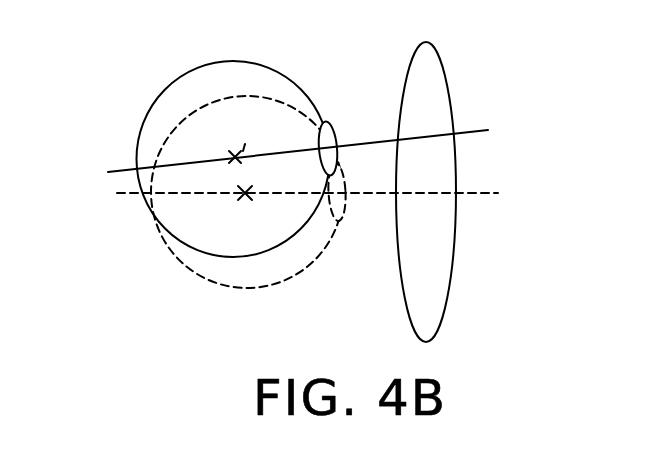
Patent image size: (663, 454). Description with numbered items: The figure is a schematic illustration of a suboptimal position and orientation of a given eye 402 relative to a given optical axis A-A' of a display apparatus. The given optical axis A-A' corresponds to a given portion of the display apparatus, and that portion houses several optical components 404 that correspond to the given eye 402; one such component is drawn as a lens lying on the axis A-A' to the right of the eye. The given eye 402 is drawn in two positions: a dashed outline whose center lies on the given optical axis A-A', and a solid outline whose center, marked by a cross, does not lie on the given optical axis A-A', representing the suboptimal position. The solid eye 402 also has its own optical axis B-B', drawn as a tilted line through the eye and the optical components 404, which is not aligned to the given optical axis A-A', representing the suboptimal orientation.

The given eye 402 is at (190, 184).
The optical components 404 is at (467, 187).
The given optical axis A-A' A is at (296, 194).
The given optical axis A- A' is at (384, 194).
The optical axis B-B' of the given eye B is at (287, 159).
The optical axis B-B' of the given eye B' is at (372, 140).